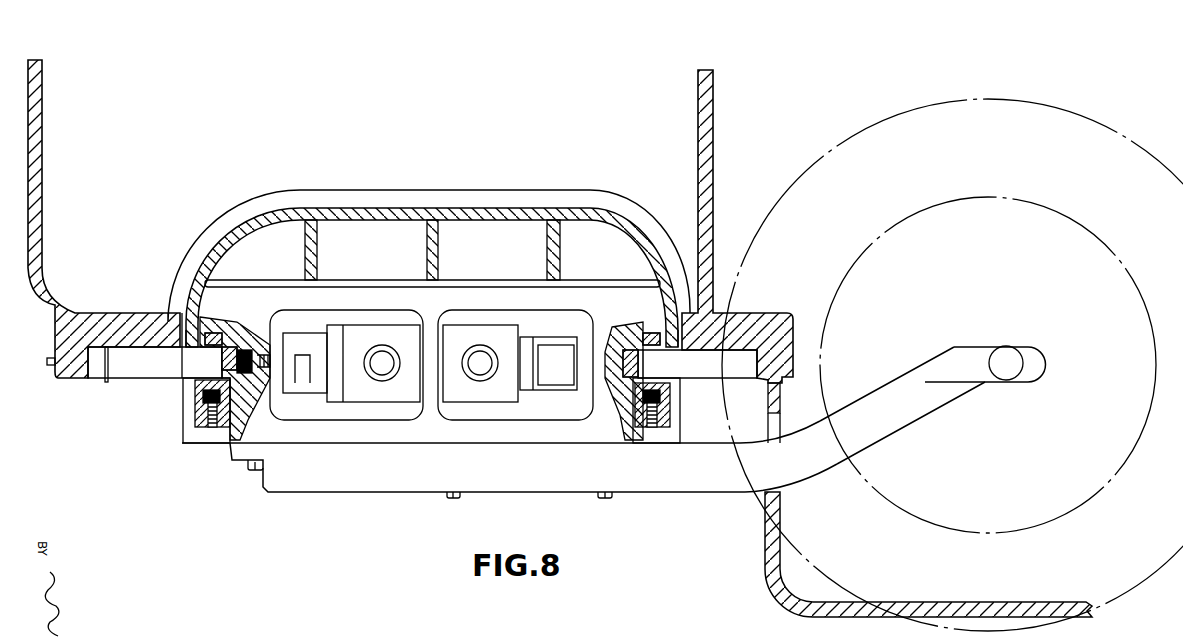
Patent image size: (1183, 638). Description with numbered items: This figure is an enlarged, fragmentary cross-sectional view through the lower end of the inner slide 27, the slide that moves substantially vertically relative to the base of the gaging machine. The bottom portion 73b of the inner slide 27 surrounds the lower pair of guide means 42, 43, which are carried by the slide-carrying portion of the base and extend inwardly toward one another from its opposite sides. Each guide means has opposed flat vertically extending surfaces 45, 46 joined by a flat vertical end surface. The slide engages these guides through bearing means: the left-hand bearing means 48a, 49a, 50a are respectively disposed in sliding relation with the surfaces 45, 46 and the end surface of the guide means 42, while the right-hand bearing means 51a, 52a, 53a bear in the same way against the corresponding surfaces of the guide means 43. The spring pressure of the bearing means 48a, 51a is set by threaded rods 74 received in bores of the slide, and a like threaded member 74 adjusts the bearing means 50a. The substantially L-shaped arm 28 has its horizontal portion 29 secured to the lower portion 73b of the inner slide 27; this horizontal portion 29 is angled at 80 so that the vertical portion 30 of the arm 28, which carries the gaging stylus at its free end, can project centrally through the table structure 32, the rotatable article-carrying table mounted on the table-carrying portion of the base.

The inner slide 27 is at (433, 212).
The L-shaped arm 28 is at (806, 476).
The horizontal portion 29 is at (658, 485).
The vertical portion 30 is at (1010, 355).
The table structure 32 is at (859, 249).
The guide means 42 is at (155, 370).
The guide means 43 is at (728, 370).
The flat vertically extending surface 45 is at (190, 392).
The flat vertically extending surface 46 is at (186, 304).
The left-hand bearing means 48a is at (237, 405).
The left-hand bearing means 49a is at (225, 340).
The left-hand bearing means 50a is at (247, 350).
The right-hand bearing means 51a is at (637, 397).
The right-hand bearing means 52a is at (652, 333).
The right-hand bearing means 53a is at (640, 330).
The bottom portion 73b is at (440, 435).
The member 74 is at (203, 410).
The angle 80 is at (797, 441).